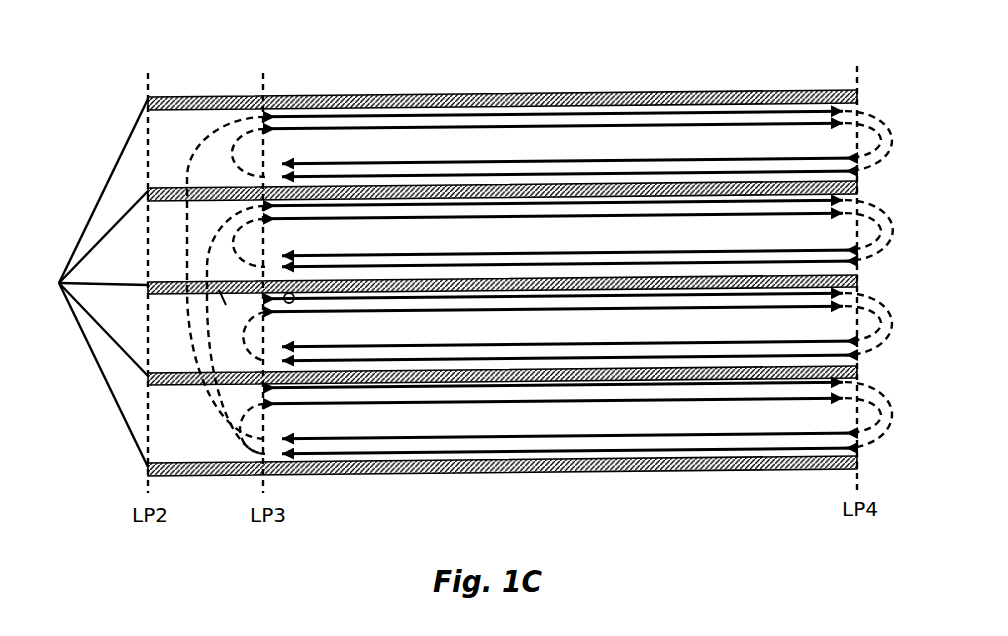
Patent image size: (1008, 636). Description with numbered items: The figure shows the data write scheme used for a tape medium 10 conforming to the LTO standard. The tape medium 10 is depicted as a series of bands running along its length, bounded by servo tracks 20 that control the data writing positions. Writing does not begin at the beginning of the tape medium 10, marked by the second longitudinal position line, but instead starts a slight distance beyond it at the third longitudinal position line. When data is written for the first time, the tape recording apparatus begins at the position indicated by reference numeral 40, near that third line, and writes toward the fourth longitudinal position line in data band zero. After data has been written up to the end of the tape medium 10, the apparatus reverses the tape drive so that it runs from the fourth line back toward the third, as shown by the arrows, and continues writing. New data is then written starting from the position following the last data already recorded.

The tape medium 10 is at (829, 50).
The servo tracks 20 is at (87, 283).
The position where data writing starts 40 is at (284, 298).